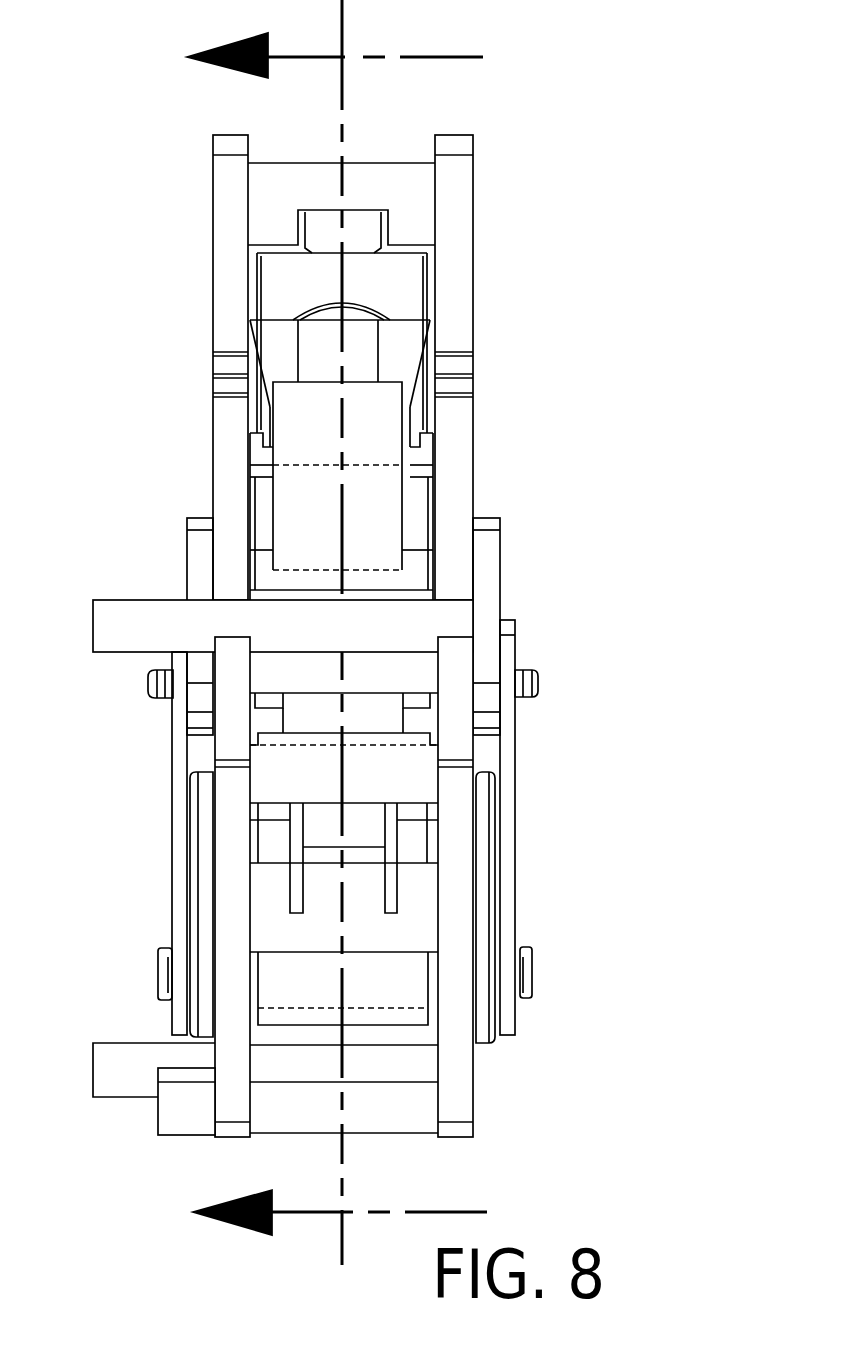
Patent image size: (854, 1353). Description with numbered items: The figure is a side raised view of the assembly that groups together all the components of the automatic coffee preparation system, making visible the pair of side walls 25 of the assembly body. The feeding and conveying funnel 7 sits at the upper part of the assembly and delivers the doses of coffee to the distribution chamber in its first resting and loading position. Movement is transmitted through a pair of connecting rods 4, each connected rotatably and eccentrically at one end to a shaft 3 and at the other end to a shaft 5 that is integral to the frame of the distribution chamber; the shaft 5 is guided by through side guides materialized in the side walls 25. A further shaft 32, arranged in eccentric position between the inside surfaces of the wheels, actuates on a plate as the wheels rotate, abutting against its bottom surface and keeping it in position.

The side walls 25 is at (457, 230).
The feeding and conveying funnel 7 is at (402, 340).
The shaft 5 is at (538, 673).
The eccentric shaft 32 is at (407, 778).
The connecting rods 4 is at (515, 852).
The shaft 3 is at (525, 975).